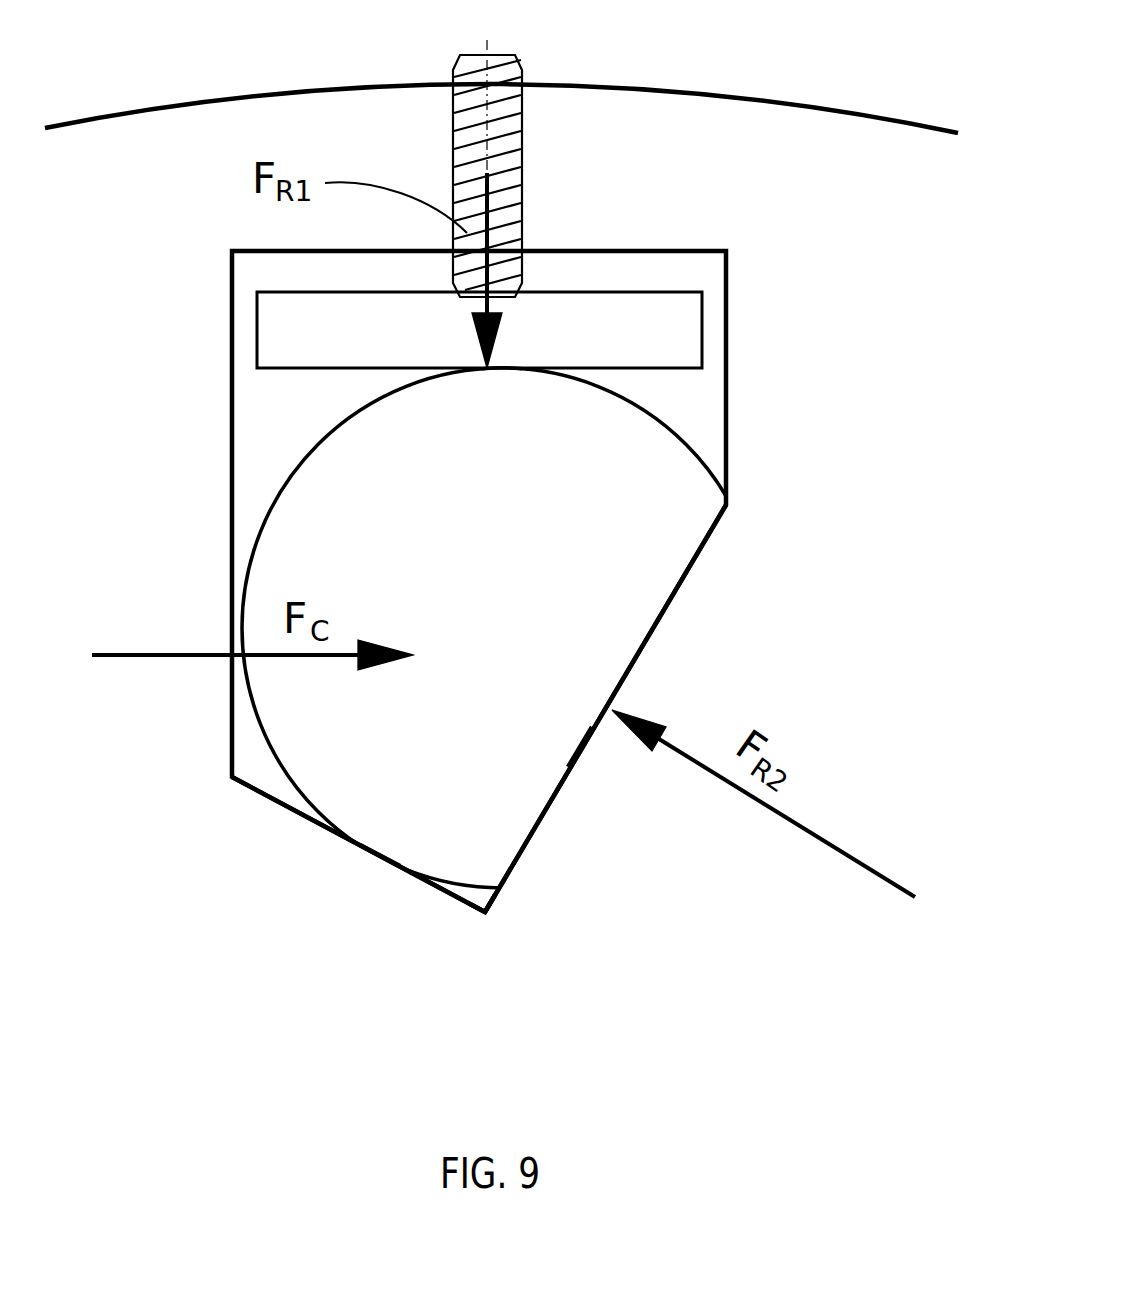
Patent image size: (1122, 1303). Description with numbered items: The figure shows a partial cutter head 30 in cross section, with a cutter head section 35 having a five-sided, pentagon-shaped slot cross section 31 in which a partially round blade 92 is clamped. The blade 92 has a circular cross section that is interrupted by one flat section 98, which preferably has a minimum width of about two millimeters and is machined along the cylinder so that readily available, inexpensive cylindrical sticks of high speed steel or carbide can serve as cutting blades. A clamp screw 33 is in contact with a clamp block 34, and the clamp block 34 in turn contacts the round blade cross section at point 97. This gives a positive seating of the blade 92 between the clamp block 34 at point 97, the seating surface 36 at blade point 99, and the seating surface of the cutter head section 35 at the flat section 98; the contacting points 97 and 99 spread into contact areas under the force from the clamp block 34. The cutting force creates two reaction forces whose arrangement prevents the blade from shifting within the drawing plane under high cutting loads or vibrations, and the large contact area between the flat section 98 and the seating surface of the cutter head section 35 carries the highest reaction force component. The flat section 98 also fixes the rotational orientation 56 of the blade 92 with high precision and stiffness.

The cutter head 30 is at (717, 92).
The five-sided slot cross section 31 is at (683, 408).
The clamp screw 33 is at (512, 183).
The clamp block 34 is at (636, 325).
The cutter head section 35 is at (498, 893).
The seating surface 36 is at (452, 902).
The rotational orientation 56 is at (543, 530).
The partially round blade 92 is at (665, 557).
The contact point 97 is at (490, 371).
The flat section 98 is at (580, 747).
The blade point 99 is at (373, 847).